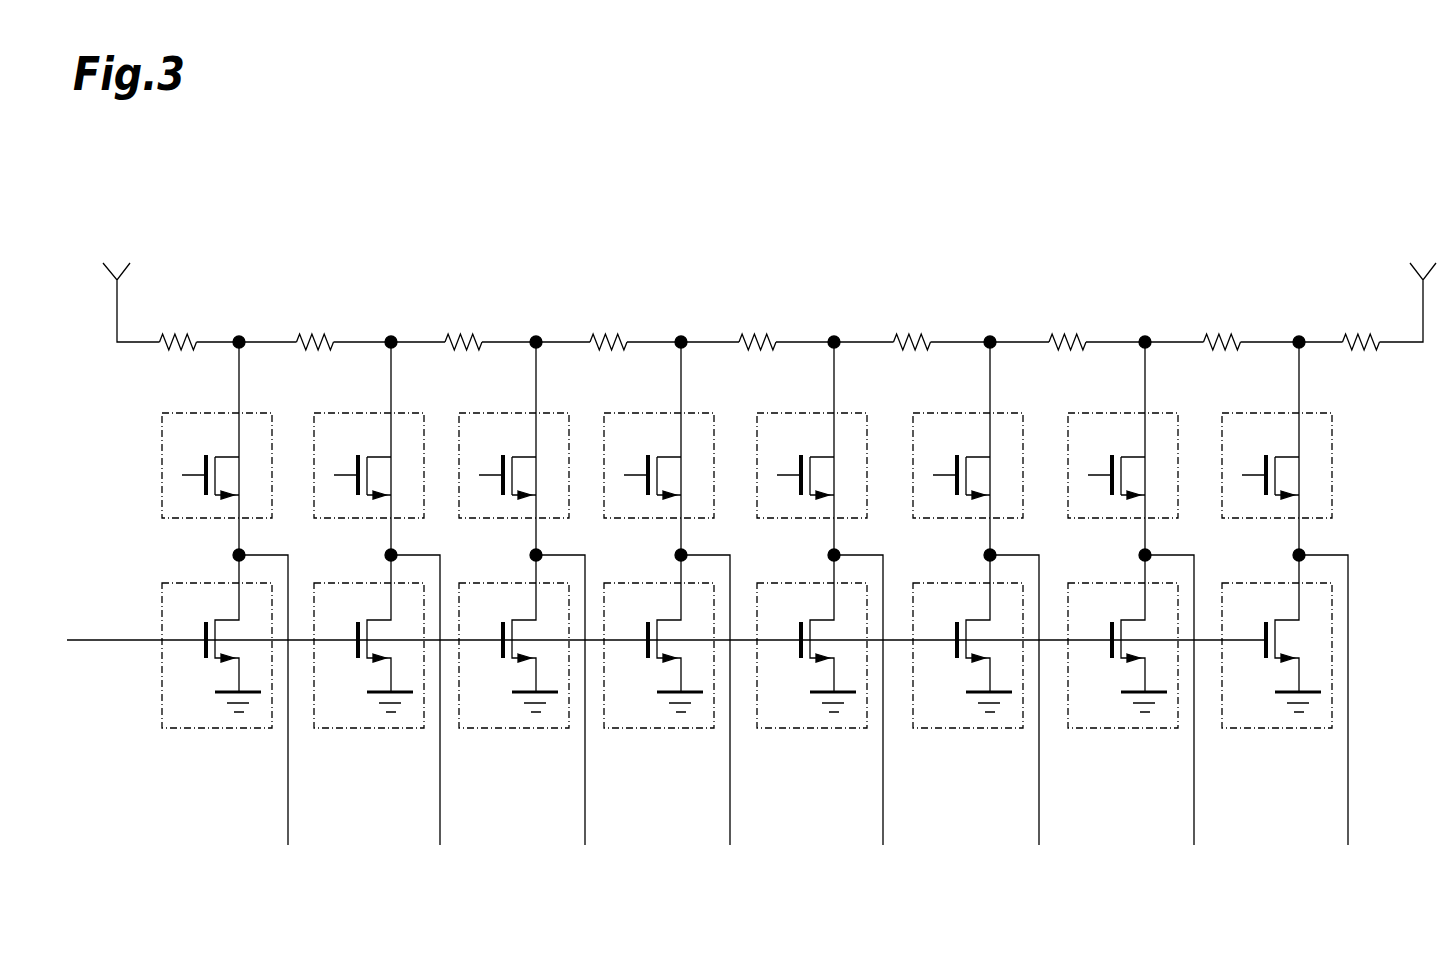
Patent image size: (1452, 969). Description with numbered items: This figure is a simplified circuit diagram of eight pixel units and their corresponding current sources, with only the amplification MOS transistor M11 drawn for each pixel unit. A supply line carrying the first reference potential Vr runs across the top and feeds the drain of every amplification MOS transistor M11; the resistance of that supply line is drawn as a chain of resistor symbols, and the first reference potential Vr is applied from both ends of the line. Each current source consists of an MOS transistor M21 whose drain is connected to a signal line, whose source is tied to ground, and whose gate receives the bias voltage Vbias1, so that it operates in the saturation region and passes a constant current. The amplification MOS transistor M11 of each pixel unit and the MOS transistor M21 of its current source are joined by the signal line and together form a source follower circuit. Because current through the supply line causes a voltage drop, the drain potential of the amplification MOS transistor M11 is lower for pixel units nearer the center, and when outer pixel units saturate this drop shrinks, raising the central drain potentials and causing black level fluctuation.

The first reference potential Vr is at (769, 286).
The bias voltage Vbias1 is at (666, 624).
The amplification MOS transistor M11 is at (747, 465).
The MOS transistor M21 is at (747, 641).